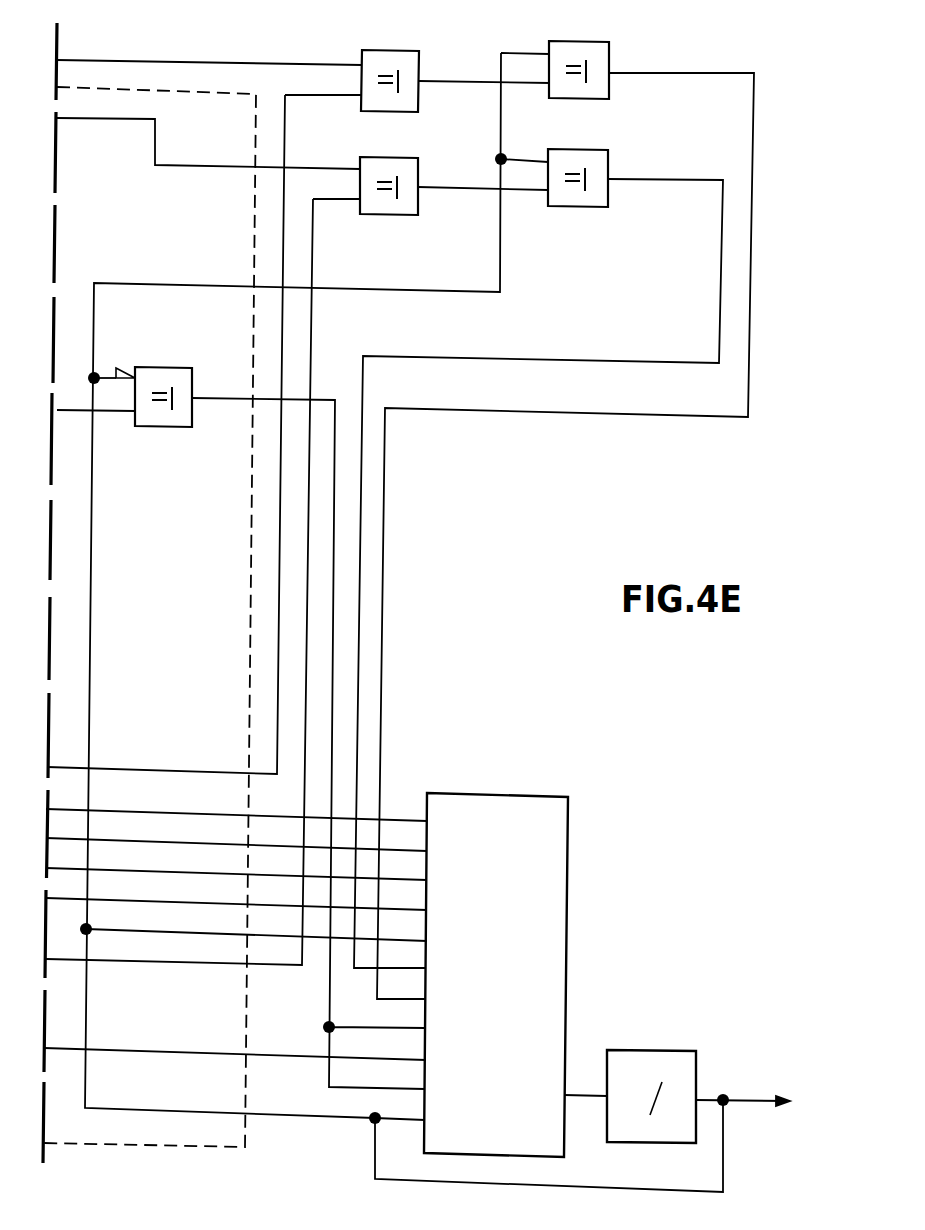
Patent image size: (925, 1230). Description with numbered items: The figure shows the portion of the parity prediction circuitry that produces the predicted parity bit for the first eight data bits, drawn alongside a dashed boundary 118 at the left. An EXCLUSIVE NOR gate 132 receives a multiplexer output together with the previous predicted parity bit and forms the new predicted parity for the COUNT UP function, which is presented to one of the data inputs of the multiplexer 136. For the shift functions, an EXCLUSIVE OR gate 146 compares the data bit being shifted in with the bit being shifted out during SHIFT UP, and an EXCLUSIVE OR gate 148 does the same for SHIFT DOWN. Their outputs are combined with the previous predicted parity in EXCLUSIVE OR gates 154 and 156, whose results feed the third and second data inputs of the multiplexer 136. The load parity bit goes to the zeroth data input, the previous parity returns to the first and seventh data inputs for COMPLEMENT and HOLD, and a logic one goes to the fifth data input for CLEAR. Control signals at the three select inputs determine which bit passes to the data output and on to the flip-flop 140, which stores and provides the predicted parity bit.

The bus (dashed boundary) 118 is at (248, 630).
The EXCLUSIVE NOR gate 132 is at (162, 367).
The multiplexer (MUX) 136 is at (488, 793).
The flip-flop 140 is at (650, 1050).
The EXCLUSIVE OR gate 146 is at (362, 52).
The EXCLUSIVE OR gate 148 is at (390, 216).
The EXCLUSIVE OR gate 154 is at (608, 82).
The EXCLUSIVE OR gate 156 is at (577, 207).